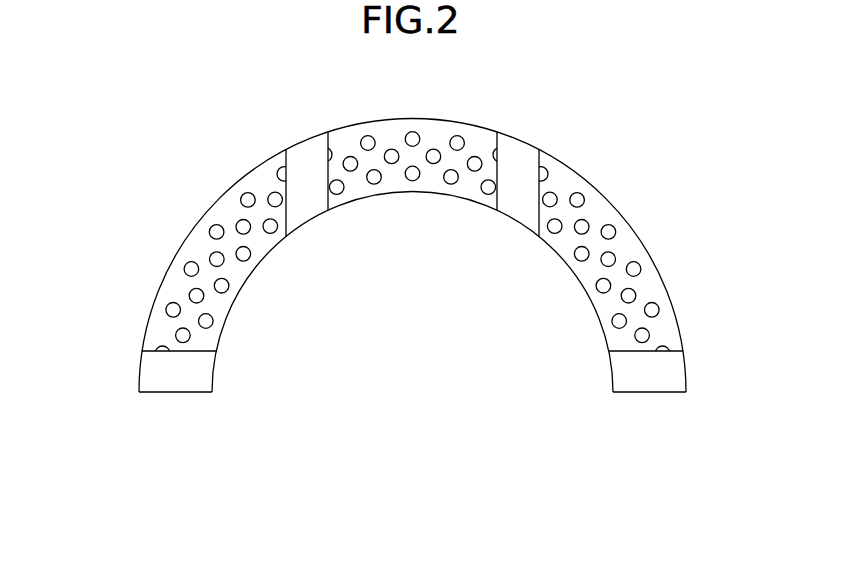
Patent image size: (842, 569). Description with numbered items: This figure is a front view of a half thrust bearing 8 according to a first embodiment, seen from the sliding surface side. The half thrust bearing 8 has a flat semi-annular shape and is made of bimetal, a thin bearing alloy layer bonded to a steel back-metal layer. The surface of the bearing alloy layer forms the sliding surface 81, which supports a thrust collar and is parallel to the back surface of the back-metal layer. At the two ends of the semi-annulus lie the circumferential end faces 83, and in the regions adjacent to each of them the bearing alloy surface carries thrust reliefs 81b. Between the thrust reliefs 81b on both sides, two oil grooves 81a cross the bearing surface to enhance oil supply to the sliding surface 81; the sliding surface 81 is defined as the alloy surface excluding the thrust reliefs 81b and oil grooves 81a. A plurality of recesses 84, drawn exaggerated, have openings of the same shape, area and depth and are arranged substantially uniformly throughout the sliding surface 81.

The half thrust bearing 8 is at (413, 267).
The sliding surface 81 is at (413, 275).
The oil grooves 81a is at (306, 150).
The thrust reliefs 81b is at (163, 377).
The circumferential end faces 83 is at (177, 393).
The recesses 84 is at (247, 198).